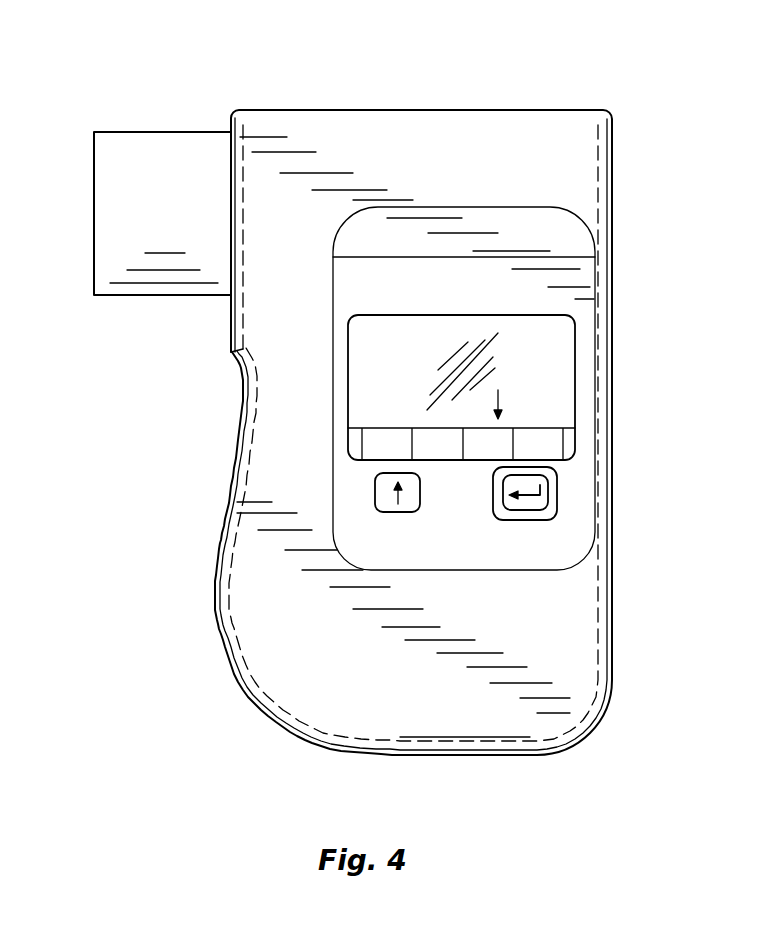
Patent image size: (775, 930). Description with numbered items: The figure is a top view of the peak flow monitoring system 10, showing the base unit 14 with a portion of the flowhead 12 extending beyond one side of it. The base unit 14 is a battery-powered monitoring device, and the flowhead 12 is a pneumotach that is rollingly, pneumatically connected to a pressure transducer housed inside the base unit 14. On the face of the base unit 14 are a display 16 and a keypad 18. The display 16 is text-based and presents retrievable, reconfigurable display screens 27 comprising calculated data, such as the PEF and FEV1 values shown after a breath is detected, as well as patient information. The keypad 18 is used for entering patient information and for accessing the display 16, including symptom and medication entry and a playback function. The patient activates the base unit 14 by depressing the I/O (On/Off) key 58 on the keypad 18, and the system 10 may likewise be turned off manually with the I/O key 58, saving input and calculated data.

The peak flow monitoring system 10 is at (645, 149).
The flowhead 12 is at (165, 160).
The base unit 14 is at (578, 668).
The display 16 is at (416, 377).
The keypad 18 is at (375, 490).
The display screens 27 is at (357, 352).
The I/O (On/Off) key 58 is at (557, 505).